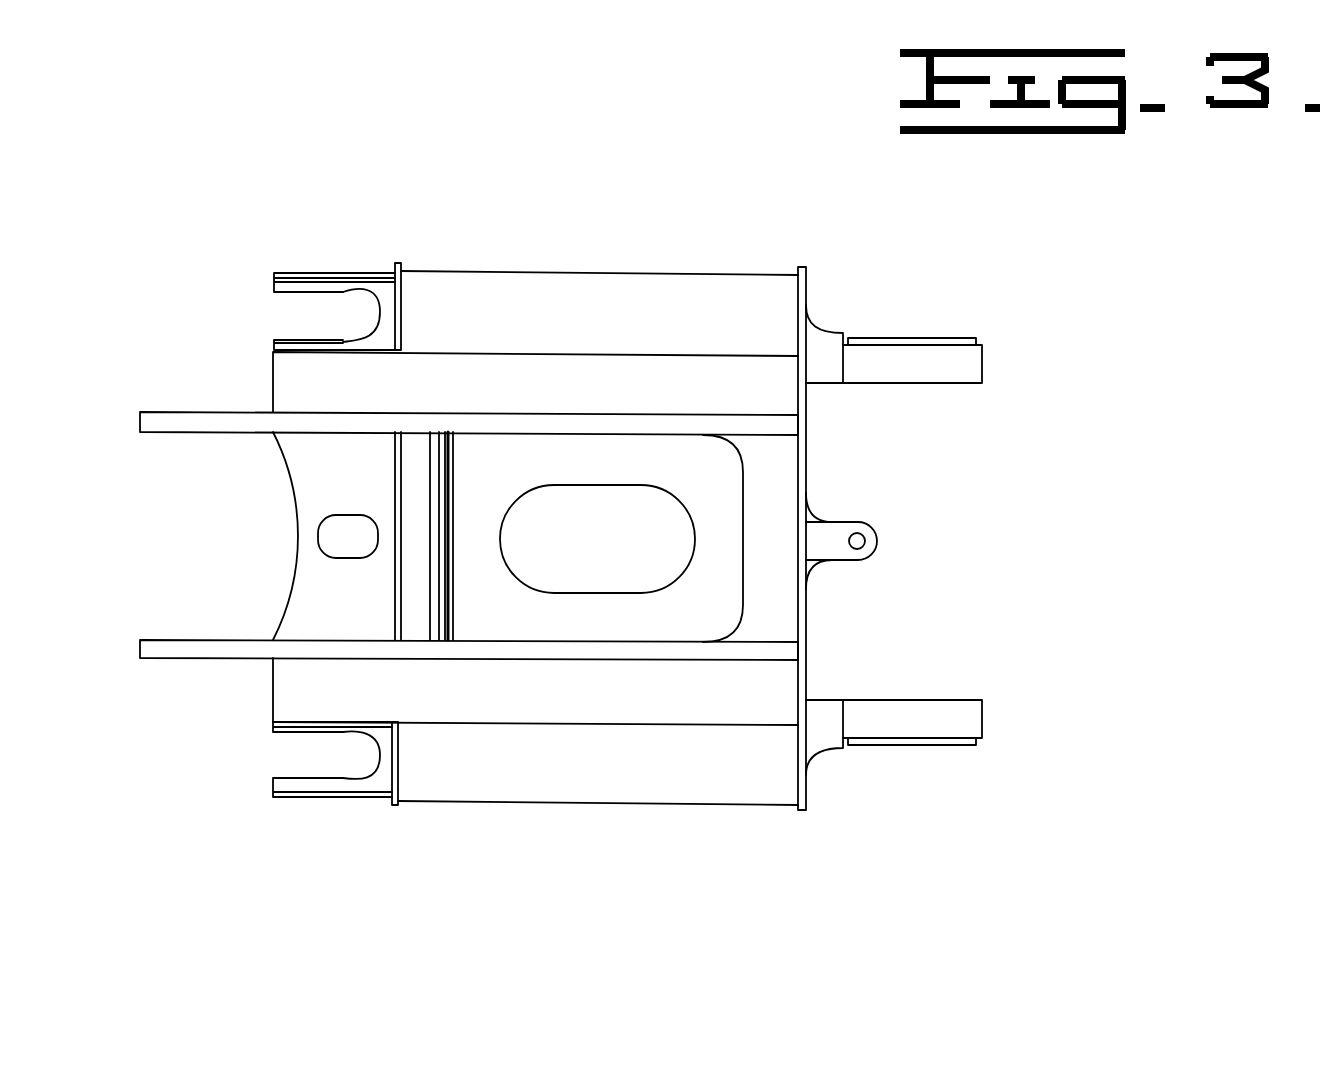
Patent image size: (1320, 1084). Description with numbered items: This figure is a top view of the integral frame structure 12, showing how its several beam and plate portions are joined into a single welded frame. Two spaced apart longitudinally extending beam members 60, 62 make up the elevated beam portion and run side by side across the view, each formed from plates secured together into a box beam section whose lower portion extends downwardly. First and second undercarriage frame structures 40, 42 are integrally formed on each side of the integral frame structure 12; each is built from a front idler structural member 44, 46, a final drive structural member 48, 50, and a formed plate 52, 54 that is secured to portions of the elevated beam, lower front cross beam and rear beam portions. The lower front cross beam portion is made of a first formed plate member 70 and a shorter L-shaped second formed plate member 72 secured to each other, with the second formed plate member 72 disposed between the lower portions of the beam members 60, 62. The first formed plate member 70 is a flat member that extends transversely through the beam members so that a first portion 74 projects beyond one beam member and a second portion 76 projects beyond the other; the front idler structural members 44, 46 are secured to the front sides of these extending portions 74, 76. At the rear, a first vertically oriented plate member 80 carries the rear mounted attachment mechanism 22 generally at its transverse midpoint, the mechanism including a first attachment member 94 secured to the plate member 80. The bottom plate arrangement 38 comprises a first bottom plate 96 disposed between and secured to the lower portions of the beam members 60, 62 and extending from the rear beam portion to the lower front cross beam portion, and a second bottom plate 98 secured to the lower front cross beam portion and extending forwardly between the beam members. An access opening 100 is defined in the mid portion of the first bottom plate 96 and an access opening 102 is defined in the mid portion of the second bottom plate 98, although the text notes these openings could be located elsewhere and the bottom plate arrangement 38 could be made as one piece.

The integral frame structure 12 is at (863, 293).
The rear mounted attachment mechanism 22 is at (893, 548).
The bottom plate arrangement 38 is at (543, 643).
The first undercarriage frame structure 40 is at (477, 225).
The second undercarriage frame structure 42 is at (575, 835).
The first front idler structural member 44 is at (293, 278).
The second front idler structural member 46 is at (287, 795).
The first final drive structural member 48 is at (957, 368).
The second final drive structural member 50 is at (948, 733).
The first formed plate 52 is at (602, 283).
The second formed plate 54 is at (630, 792).
The first longitudinally extending beam member 60 is at (273, 373).
The second longitudinally extending beam member 62 is at (272, 700).
The first formed plate member 70 is at (395, 485).
The second formed plate member 72 is at (418, 470).
The first portion 74 is at (402, 310).
The second portion 76 is at (402, 750).
The first vertically oriented plate member 80 is at (800, 612).
The first attachment member 94 is at (840, 530).
The first bottom plate 96 is at (640, 450).
The second bottom plate 98 is at (315, 462).
The access opening 100 is at (630, 593).
The access opening 102 is at (323, 548).